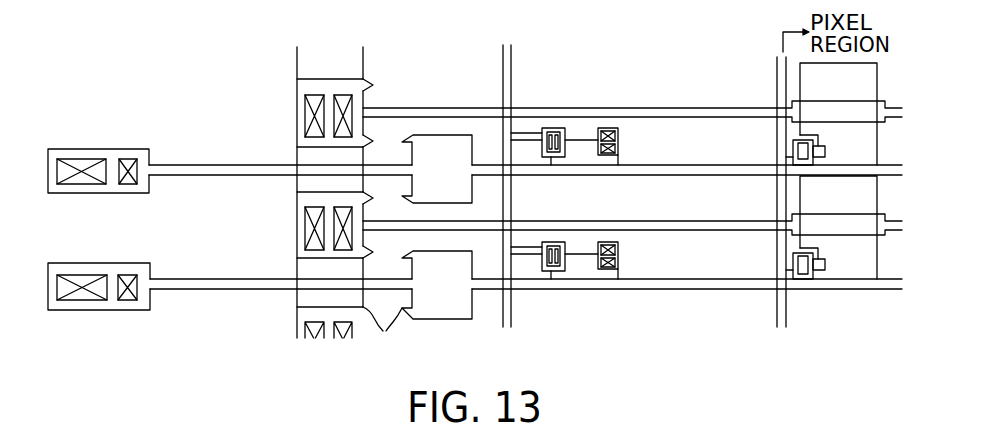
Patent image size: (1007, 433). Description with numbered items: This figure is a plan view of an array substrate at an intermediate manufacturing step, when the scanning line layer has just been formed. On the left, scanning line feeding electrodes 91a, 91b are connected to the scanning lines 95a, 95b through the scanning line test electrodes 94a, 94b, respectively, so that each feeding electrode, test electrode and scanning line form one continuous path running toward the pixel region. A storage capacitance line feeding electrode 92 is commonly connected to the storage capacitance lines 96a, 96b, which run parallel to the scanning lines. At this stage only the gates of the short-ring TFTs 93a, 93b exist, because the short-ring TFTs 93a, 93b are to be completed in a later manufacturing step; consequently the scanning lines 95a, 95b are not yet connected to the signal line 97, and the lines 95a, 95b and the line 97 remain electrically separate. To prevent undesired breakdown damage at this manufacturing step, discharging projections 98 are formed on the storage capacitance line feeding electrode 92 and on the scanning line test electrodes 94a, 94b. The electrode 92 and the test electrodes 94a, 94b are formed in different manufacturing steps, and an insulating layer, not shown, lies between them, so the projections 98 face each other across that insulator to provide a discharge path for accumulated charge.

The scanning line feeding electrode 91a is at (86, 148).
The scanning line feeding electrode 91b is at (100, 312).
The storage capacitance line feeding electrode 92 is at (310, 58).
The short-ring TFT 93a is at (571, 128).
The short-ring TFT 93b is at (556, 272).
The scanning line test electrode 94a is at (442, 160).
The scanning line test electrode 94b is at (438, 320).
The scanning line 95a is at (668, 164).
The scanning line 95b is at (670, 289).
The storage capacitance line 96a is at (642, 107).
The storage capacitance line 96b is at (635, 220).
The signal line 97 is at (510, 53).
The discharging projection 98 is at (385, 333).